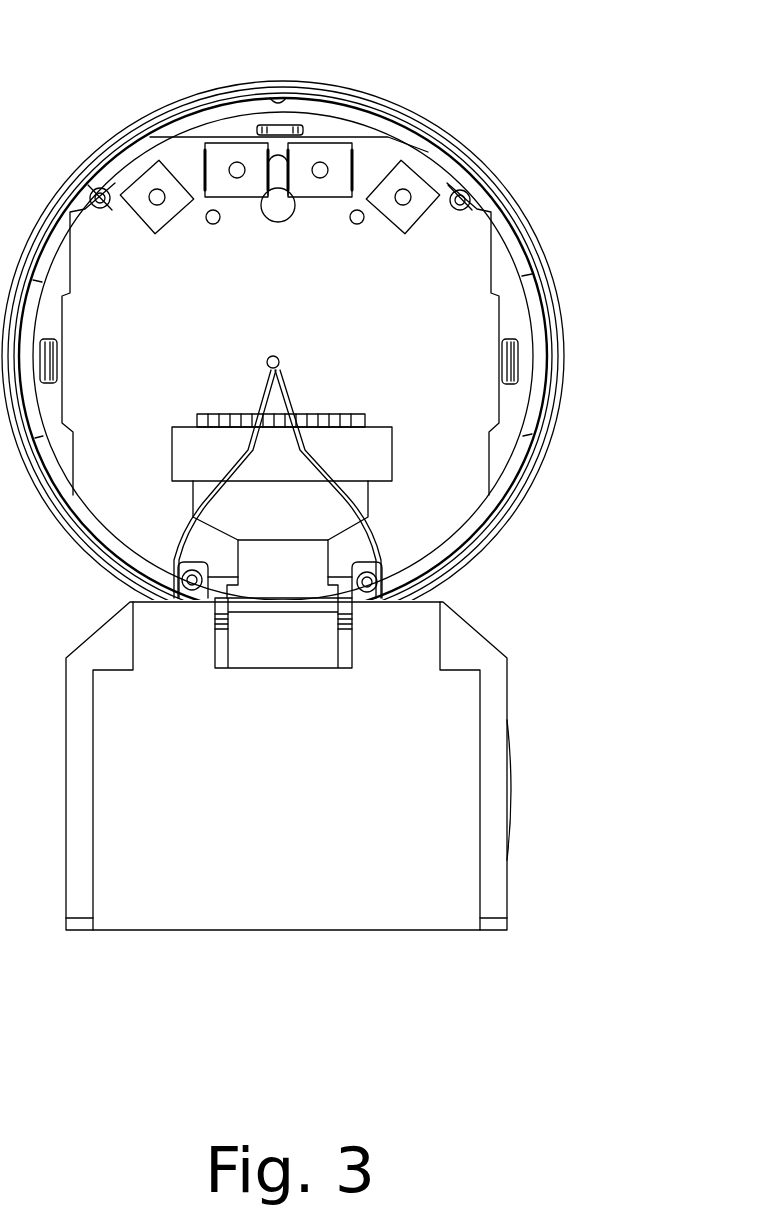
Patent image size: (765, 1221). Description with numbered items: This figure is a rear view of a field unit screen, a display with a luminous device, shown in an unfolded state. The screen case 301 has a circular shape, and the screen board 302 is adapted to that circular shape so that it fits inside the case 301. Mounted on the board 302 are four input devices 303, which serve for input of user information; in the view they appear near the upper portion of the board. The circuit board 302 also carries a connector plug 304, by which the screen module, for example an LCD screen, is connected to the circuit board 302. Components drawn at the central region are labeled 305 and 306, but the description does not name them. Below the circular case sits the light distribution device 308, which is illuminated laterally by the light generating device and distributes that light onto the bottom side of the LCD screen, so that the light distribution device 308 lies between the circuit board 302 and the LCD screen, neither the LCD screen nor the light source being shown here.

The screen case 301 is at (505, 190).
The screen board 302 is at (458, 252).
The input devices 303 is at (150, 152).
The connector plug 304 is at (170, 440).
The spring 305 is at (277, 354).
The screws 306 is at (170, 540).
The light distribution device 308 is at (295, 885).